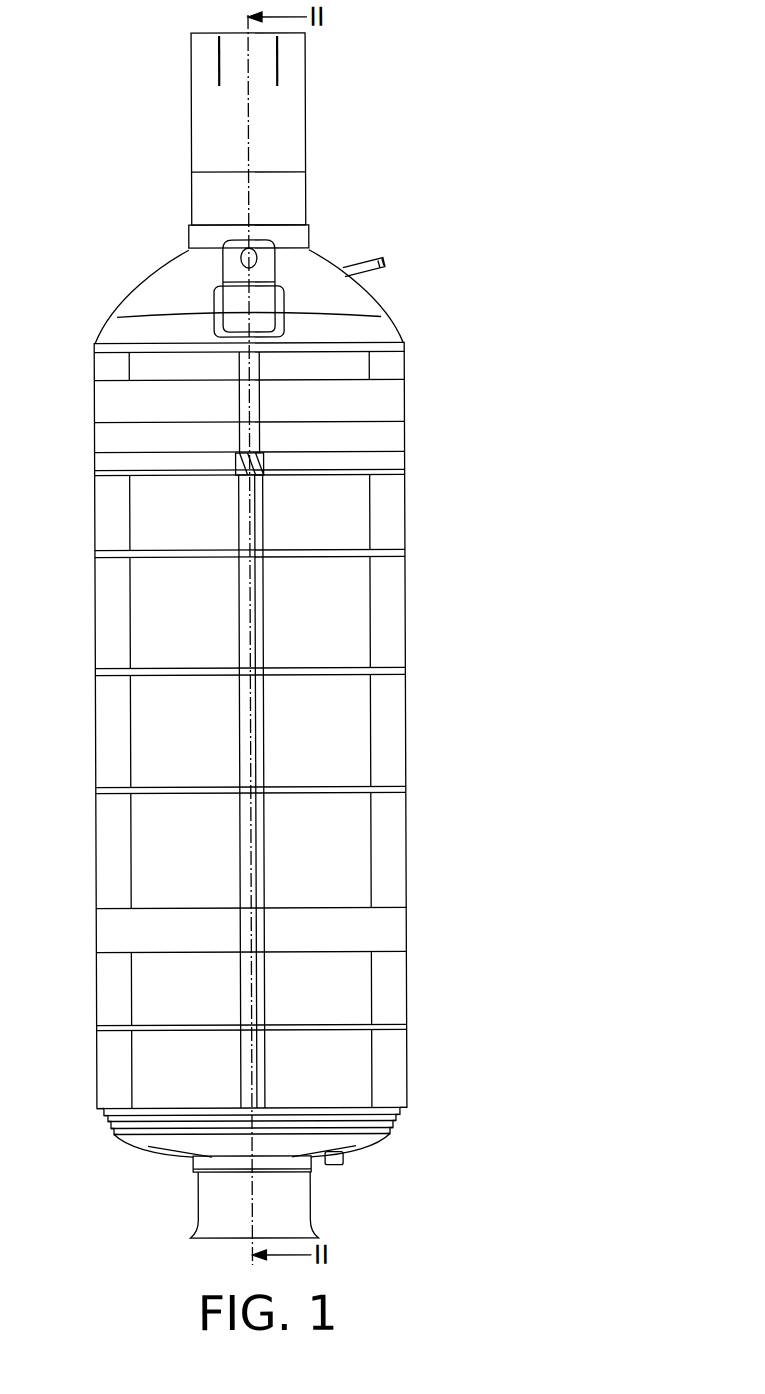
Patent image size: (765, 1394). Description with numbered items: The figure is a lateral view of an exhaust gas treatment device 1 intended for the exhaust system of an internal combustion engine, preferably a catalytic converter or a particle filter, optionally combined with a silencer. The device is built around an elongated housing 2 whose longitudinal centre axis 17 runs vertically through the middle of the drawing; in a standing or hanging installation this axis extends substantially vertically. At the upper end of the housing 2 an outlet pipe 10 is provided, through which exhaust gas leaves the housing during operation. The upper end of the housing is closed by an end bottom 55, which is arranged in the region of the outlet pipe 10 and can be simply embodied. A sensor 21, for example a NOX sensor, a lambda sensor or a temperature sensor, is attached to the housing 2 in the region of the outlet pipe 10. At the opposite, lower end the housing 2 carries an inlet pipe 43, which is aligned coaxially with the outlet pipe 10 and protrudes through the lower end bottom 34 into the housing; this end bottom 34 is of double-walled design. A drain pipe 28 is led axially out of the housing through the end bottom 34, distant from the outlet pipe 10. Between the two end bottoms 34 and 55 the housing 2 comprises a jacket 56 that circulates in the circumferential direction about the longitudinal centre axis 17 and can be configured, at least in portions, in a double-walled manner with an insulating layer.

The exhaust gas treatment device 1 is at (528, 171).
The housing 2 is at (404, 362).
The outlet pipe 10 is at (305, 137).
The longitudinal centre axis 17 is at (247, 116).
The sensor 21 is at (358, 266).
The drain pipe 28 is at (340, 1157).
The end bottom 34 is at (152, 1142).
The inlet pipe 43 is at (308, 1204).
The end bottom 55 is at (378, 299).
The jacket 56 is at (404, 617).